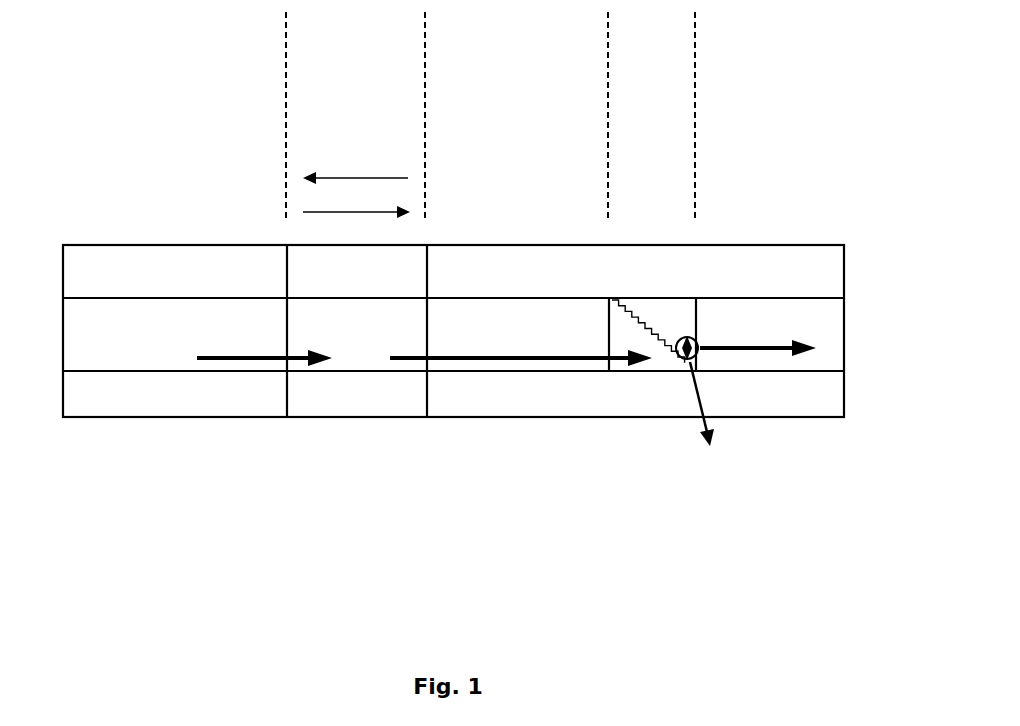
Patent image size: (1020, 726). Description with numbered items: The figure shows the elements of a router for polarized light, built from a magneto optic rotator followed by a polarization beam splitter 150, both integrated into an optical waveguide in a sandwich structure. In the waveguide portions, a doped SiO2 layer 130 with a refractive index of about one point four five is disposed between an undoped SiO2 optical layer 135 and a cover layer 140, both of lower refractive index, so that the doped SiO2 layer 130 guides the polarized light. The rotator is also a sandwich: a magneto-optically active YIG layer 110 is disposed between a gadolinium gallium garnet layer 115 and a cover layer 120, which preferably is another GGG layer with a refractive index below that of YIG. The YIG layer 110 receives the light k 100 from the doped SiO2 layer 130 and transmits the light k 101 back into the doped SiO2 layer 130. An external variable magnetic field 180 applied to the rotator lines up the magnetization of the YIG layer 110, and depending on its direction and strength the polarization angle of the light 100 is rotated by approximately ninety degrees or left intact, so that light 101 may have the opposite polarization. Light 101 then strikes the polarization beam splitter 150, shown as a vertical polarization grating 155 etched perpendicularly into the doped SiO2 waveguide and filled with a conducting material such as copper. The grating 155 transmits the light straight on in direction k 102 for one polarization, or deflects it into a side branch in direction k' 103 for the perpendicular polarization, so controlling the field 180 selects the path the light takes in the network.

The light k 100 is at (297, 363).
The light k 101 is at (495, 367).
The light k 102 is at (763, 357).
The light k' 103 is at (700, 392).
The magneto-optically active layer 110 is at (373, 340).
The gadolinium gallium garnet layer 115 is at (322, 425).
The cover layer 120 is at (391, 238).
The doped SiO2 layer 130 is at (165, 340).
The undoped SiO2 optical layer 135 is at (95, 425).
The cover layer 140 is at (130, 238).
The polarization beam splitter 150 is at (662, 380).
The vertical polarization grating 155 is at (652, 322).
The external variable magnetic field 180 is at (320, 167).